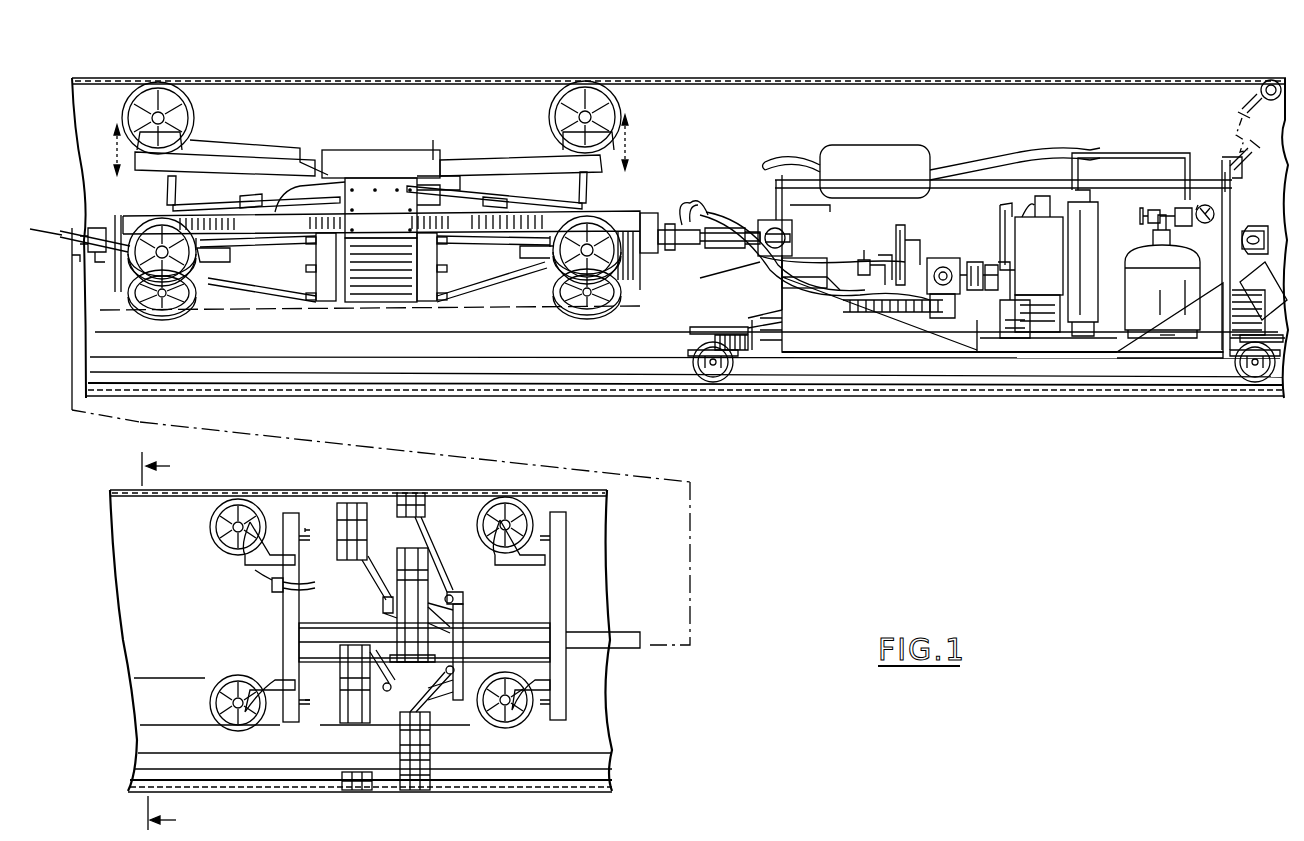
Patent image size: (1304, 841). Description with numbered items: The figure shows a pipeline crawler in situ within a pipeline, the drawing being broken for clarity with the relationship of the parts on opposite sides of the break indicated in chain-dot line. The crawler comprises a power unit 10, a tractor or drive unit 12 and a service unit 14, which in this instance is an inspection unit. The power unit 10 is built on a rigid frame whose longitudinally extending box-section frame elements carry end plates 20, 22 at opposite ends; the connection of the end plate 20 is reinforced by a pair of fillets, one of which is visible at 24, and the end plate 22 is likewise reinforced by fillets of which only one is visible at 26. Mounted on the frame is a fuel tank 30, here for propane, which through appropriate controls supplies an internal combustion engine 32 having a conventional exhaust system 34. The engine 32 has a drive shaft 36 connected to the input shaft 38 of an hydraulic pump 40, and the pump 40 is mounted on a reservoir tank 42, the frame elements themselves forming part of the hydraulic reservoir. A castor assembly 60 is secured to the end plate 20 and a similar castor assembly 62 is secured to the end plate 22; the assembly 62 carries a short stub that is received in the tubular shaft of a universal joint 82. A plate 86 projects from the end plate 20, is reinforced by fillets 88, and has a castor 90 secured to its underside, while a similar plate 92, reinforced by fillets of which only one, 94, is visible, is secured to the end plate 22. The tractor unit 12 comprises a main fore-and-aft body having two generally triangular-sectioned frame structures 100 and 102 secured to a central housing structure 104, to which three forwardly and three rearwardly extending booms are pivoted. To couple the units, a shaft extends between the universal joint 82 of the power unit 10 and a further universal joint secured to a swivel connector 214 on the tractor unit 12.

The power unit 10 is at (112, 62).
The tractor unit 12 is at (408, 322).
The service unit 14 is at (578, 686).
The end plate 20 is at (1222, 200).
The end plate 22 is at (748, 262).
The fillet 24 is at (1157, 342).
The fillet 26 is at (822, 340).
The fuel tank 30 is at (1142, 270).
The internal combustion engine 32 is at (1040, 235).
The exhaust system 34 is at (988, 160).
The drive shaft 36 is at (1008, 292).
The input shaft 38 is at (977, 302).
The hydraulic pump 40 is at (938, 298).
The reservoir tank 42 is at (905, 312).
The castor assembly 60 is at (1254, 226).
The castor assembly 62 is at (752, 205).
The universal joint 82 is at (728, 225).
The plate 86 is at (1240, 330).
The fillets 88 is at (1248, 320).
The castor 90 is at (718, 366).
The plate 92 is at (770, 330).
The fillet 94 is at (755, 320).
The frame structure 100 is at (586, 228).
The frame structure 102 is at (262, 225).
The central housing structure 104 is at (367, 195).
The swivel connector 214 is at (688, 250).